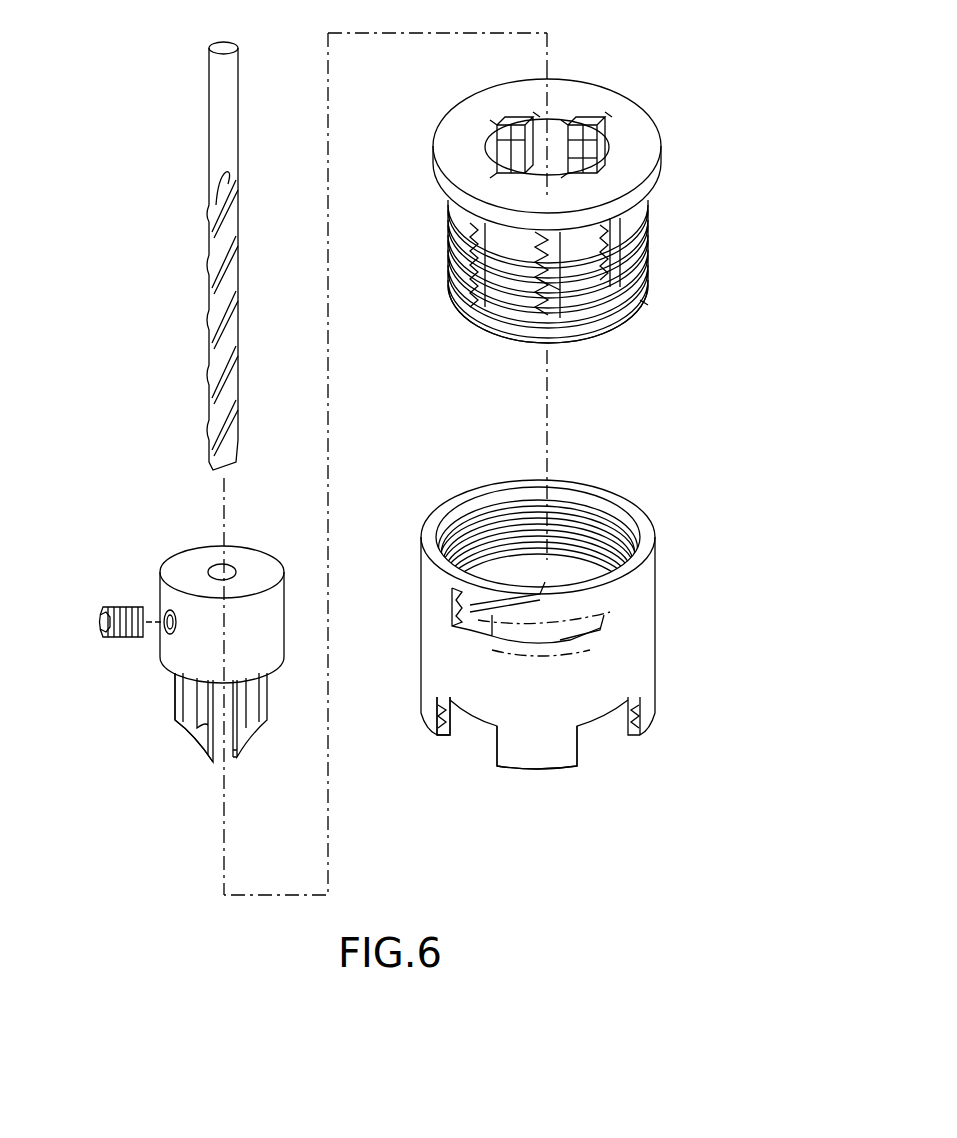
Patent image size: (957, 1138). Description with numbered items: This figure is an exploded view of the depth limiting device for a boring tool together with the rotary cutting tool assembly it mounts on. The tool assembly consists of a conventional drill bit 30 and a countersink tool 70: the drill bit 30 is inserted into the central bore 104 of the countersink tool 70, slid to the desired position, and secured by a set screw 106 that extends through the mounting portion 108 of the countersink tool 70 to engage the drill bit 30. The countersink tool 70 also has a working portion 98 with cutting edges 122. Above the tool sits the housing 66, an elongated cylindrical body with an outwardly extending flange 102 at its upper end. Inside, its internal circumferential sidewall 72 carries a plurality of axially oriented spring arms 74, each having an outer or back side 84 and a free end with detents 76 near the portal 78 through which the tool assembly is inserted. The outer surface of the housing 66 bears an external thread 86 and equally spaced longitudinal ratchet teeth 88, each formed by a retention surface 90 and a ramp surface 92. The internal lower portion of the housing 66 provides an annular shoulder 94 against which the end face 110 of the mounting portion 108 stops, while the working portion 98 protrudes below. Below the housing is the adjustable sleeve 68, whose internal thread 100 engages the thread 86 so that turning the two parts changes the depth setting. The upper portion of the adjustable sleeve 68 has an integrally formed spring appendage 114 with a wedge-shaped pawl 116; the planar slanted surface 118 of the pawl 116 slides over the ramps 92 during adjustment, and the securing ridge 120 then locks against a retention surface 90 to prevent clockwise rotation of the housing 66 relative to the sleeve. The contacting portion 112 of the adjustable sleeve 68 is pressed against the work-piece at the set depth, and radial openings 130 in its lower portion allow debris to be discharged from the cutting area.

The drill bit 30 is at (220, 130).
The housing 66 is at (648, 258).
The adjustable sleeve 68 is at (657, 640).
The countersink tool 70 is at (172, 577).
The internal circumferential sidewall 72 is at (540, 132).
The spring arms 74 is at (615, 140).
The detents 76 is at (513, 130).
The portal 78 is at (605, 152).
The outer or back side of the arms 84 is at (598, 166).
The external thread 86 is at (453, 322).
The ratchet teeth 88 is at (455, 283).
The retention surface 90 is at (648, 278).
The ramp surface 92 is at (645, 305).
The annular shoulder 94 is at (570, 157).
The working portion 98 is at (262, 692).
The internal thread 100 is at (543, 552).
The flange 102 is at (647, 187).
The central bore 104 is at (230, 565).
The set screw 106 is at (123, 602).
The mounting portion 108 is at (210, 648).
The end face 110 is at (172, 670).
The contacting portion 112 is at (548, 773).
The spring appendage 114 is at (577, 627).
The pawl 116 is at (533, 597).
The planar slanted surface 118 is at (462, 590).
The securing ridge 120 is at (600, 585).
The cutting edges 122 is at (237, 750).
The radial openings 130 is at (477, 733).